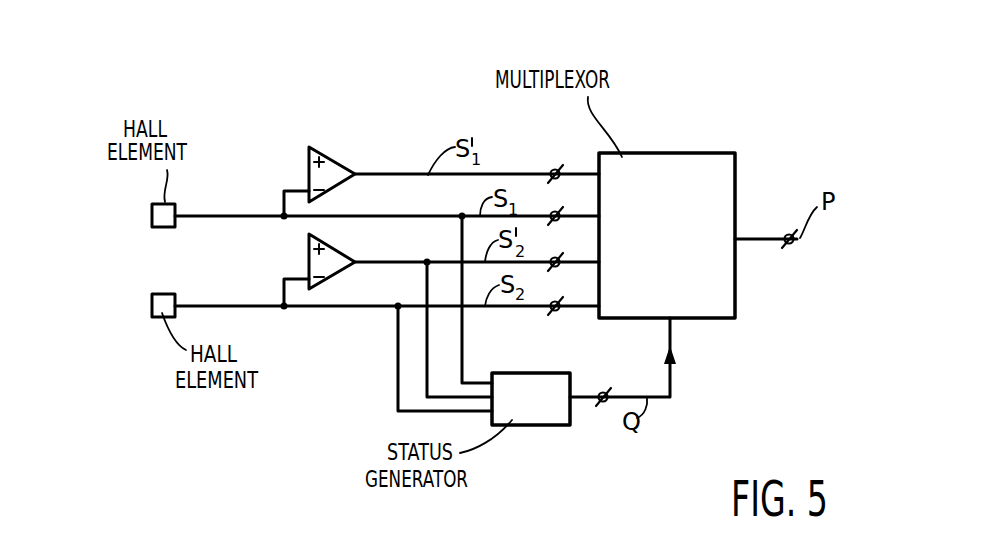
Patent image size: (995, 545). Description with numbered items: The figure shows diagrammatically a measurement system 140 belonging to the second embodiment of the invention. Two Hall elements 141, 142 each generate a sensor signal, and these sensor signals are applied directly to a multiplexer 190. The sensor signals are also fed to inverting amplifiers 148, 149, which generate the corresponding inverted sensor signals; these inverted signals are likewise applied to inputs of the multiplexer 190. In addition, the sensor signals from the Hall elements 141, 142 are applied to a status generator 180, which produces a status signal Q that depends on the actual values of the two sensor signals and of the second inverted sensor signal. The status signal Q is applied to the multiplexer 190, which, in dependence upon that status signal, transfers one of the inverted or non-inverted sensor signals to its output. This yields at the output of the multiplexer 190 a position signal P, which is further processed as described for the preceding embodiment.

The measurement system 140 is at (305, 128).
The Hall element 141 is at (172, 210).
The Hall element 142 is at (165, 293).
The inverting amplifier 148 is at (332, 156).
The inverting amplifier 149 is at (342, 246).
The status generator 180 is at (538, 418).
The multiplexer 190 is at (665, 152).